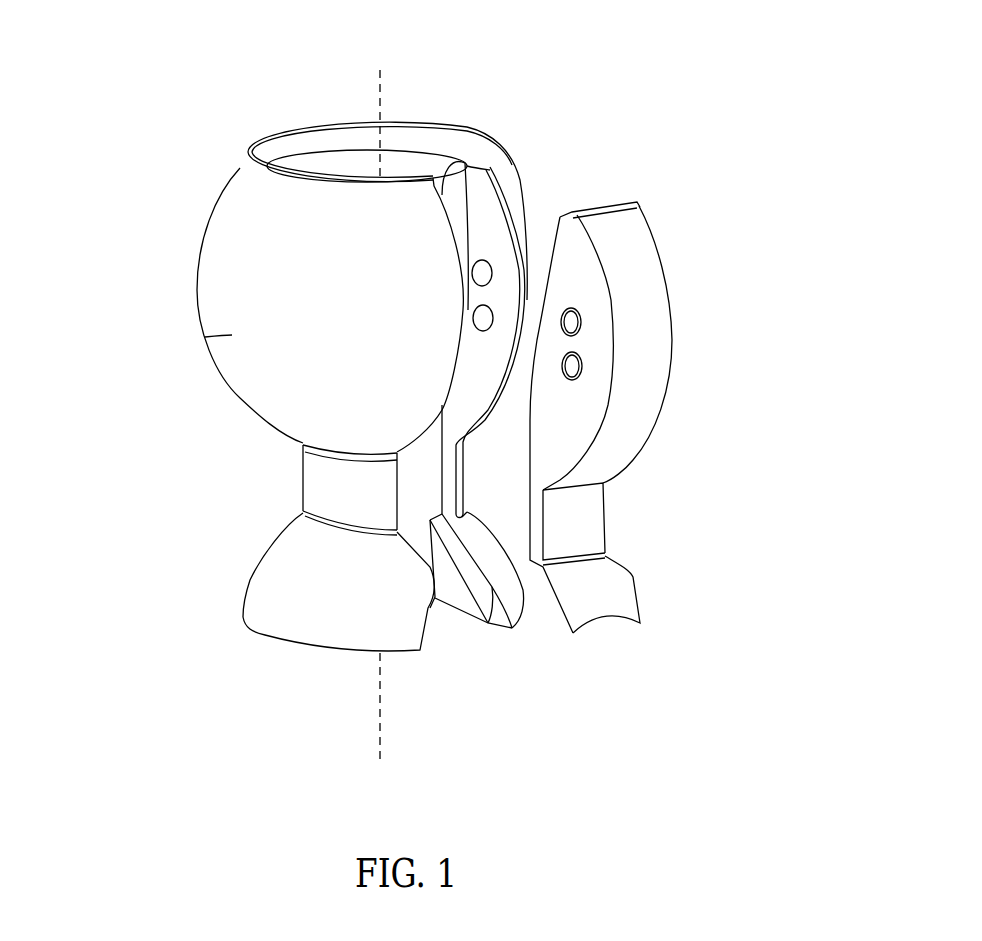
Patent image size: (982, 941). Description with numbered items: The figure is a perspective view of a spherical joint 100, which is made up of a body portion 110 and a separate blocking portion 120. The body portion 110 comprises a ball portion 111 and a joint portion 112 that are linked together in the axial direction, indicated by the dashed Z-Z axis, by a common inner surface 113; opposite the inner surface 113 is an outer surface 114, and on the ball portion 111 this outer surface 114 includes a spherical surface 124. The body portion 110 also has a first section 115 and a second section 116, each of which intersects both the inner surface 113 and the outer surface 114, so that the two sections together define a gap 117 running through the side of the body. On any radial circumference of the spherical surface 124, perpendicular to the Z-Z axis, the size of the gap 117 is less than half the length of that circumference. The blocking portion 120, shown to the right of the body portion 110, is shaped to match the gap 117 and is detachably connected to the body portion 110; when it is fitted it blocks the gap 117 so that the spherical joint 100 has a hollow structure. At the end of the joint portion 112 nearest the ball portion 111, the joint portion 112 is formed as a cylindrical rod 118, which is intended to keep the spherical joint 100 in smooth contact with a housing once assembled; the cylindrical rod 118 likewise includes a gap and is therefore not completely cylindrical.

The spherical joint 100 is at (818, 45).
The body portion 110 is at (168, 230).
The ball portion 111 is at (197, 289).
The joint portion 112 is at (272, 541).
The inner surface 113 is at (317, 167).
The outer surface 114 is at (240, 171).
The first section 115 is at (507, 230).
The second section 116 is at (460, 213).
The gap 117 is at (495, 356).
The cylindrical rod 118 is at (303, 482).
The blocking portion 120 is at (680, 288).
The spherical surface 124 is at (230, 335).